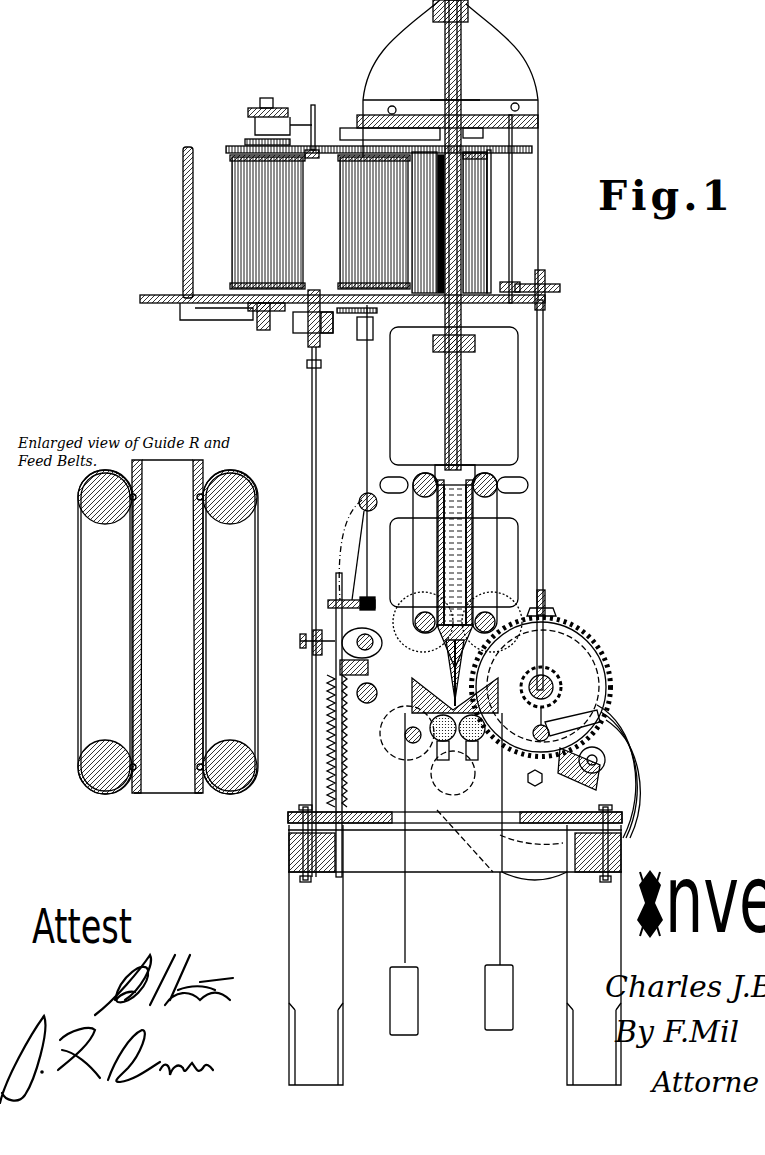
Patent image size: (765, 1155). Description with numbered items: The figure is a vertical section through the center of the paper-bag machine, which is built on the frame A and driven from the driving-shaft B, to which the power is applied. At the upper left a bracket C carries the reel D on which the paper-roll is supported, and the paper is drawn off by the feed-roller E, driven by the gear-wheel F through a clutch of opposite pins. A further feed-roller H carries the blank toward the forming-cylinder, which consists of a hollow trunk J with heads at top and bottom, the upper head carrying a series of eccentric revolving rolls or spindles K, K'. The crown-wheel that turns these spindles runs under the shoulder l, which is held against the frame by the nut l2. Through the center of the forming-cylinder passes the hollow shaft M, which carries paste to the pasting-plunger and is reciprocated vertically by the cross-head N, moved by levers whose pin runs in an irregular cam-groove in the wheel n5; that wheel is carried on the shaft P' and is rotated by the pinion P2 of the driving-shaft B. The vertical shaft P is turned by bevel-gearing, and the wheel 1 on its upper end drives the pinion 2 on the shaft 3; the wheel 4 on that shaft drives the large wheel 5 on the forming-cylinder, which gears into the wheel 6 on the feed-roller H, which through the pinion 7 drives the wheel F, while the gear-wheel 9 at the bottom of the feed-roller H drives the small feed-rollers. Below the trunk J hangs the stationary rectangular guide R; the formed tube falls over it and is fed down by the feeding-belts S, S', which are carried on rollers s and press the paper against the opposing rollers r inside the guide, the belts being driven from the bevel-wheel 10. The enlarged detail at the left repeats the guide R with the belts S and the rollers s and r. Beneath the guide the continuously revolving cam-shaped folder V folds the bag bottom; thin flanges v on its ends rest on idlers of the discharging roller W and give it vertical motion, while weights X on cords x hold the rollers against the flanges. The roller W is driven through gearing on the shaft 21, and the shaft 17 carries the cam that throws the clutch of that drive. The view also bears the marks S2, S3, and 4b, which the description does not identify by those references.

The cross-head N is at (459, 11).
The hollow shaft M is at (462, 235).
The nut l2 is at (458, 107).
The shoulder l is at (477, 133).
The wheel 4 is at (387, 147).
The large wheel 5 is at (481, 158).
The wheel 6 is at (390, 137).
The pinion 7 is at (317, 160).
The gear-wheel F is at (264, 124).
The feed-roller E is at (267, 222).
The reel D is at (177, 222).
The feed-roller H is at (374, 222).
The revolving roll or spindle K is at (424, 222).
The drum K' is at (479, 222).
The hollow trunk J is at (489, 240).
The shaft 3 is at (505, 209).
The wheel 1 is at (560, 288).
The pinion 2 is at (513, 280).
The bracket C is at (216, 320).
The gear-wheel 9 is at (360, 324).
The vertical rod S2 is at (324, 583).
The frame A is at (368, 385).
The vertical shaft P is at (549, 495).
The stationary guide R is at (470, 466).
The feeding-belt S' is at (454, 562).
The roller s is at (287, 632).
The feeding-belt S is at (168, 632).
The opposing roller r is at (166, 632).
The cam S3 is at (368, 651).
The spring 4b is at (320, 741).
The shaft 17 is at (376, 693).
The folding-cam V is at (448, 695).
The thin flange v is at (450, 670).
The discharging elastic roller W is at (460, 737).
The shaft 21 is at (415, 743).
The wheel n5 is at (551, 687).
The shaft P' is at (553, 687).
The bevel-wheel 10 is at (556, 612).
The pinion P2 is at (569, 751).
The driving-shaft B is at (540, 785).
The cord x is at (452, 918).
The weight X is at (451, 1000).